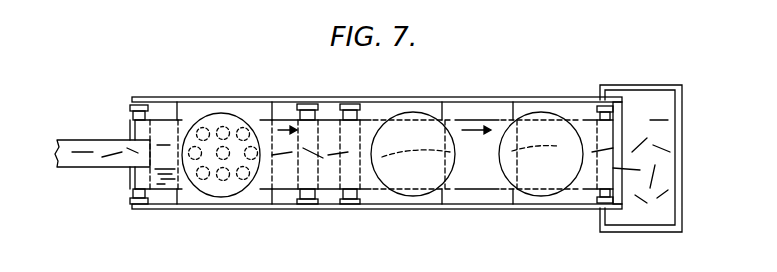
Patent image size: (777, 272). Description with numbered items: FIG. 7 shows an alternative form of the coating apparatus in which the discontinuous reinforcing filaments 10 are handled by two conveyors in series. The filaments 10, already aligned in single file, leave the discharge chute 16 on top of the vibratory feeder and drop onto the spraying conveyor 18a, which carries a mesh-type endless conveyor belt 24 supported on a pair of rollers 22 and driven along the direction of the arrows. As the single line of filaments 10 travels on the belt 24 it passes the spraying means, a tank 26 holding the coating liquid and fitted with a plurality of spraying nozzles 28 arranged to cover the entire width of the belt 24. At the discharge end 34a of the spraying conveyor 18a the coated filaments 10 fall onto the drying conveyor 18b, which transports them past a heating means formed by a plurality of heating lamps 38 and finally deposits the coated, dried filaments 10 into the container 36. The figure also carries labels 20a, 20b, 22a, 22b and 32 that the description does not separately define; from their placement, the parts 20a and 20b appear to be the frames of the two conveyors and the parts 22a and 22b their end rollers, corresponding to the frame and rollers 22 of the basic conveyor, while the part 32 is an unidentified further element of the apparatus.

The discontinuous reinforcing filaments 10 is at (110, 152).
The discharge chute 16 is at (92, 168).
The spraying conveyor 18a is at (294, 97).
The drying conveyor 18b is at (574, 210).
The first tube section 20a is at (237, 98).
The second tube section 20b is at (427, 97).
The rollers 22 is at (130, 108).
The coupling 22a is at (154, 97).
The coupling 22b is at (325, 118).
The mesh-type endless conveyor belt 24 is at (285, 183).
The tank 26 is at (209, 118).
The spraying nozzles 28 is at (253, 181).
The tube wall 32 is at (473, 112).
The discharge end 34a is at (350, 137).
The container 36 is at (622, 86).
The heating lamps 38 is at (413, 197).